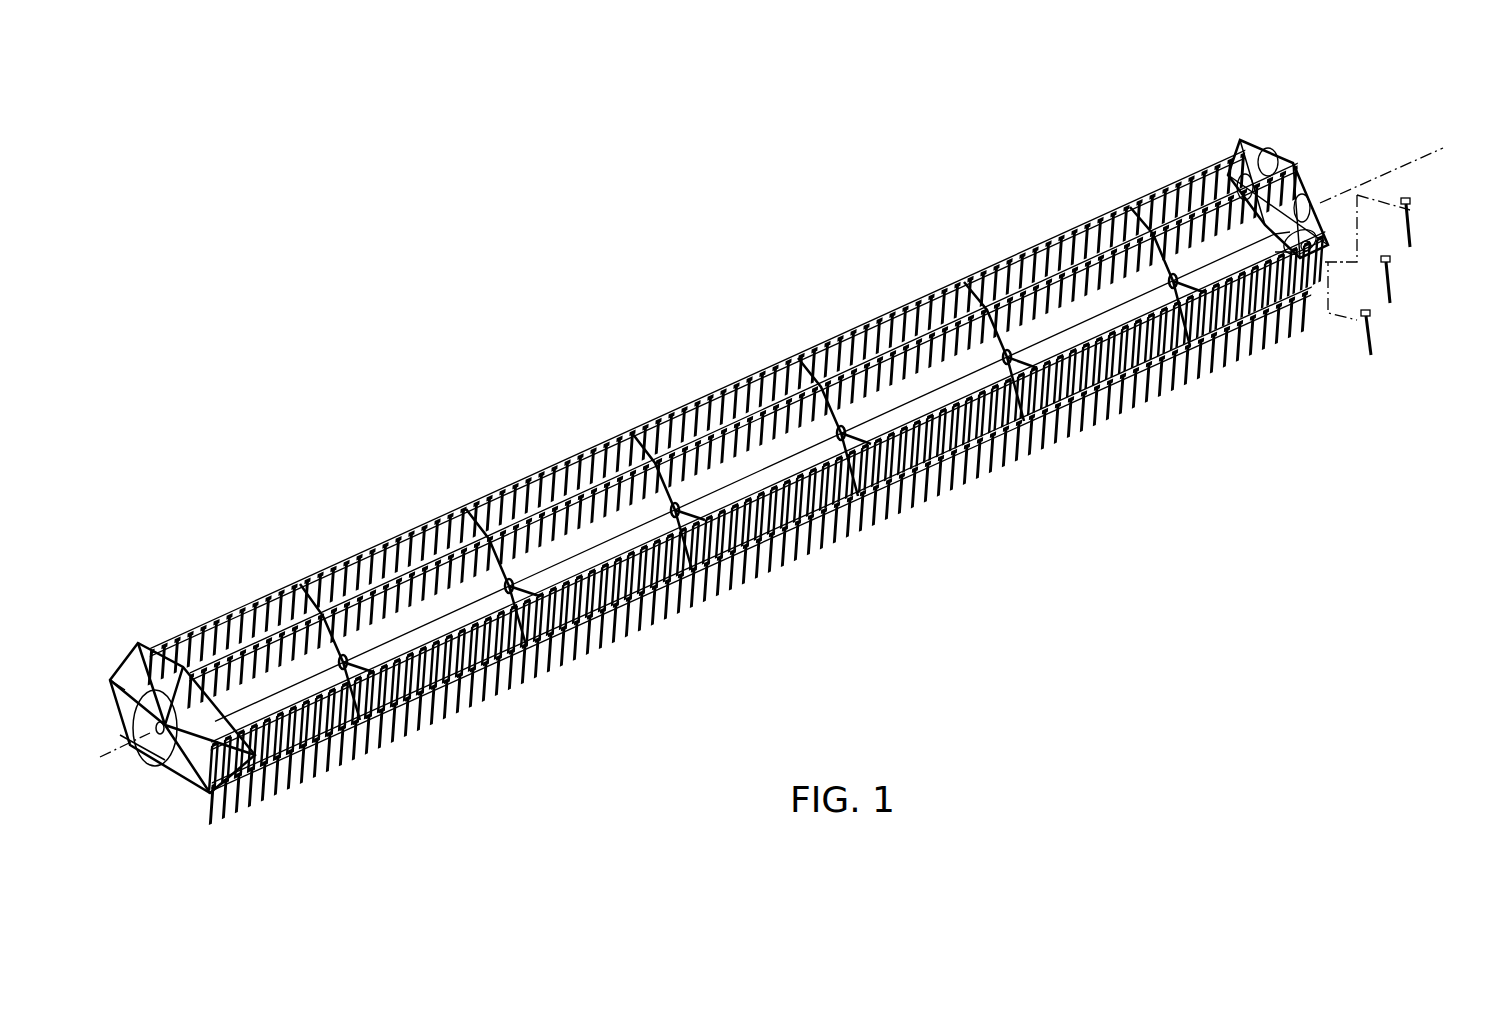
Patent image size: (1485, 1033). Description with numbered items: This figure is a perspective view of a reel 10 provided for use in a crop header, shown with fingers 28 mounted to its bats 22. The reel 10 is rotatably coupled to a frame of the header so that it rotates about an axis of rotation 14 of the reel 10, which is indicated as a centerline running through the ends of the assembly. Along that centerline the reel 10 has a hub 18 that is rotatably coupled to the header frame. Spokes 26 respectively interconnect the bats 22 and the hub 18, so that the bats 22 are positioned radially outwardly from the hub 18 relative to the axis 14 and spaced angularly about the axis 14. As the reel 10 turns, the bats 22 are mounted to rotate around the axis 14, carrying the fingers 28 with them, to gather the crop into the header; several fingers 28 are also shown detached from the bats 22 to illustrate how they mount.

The reel 10 is at (437, 237).
The axis of rotation 14 is at (110, 757).
The hub 18 is at (920, 392).
The bats 22 is at (1310, 205).
The spokes 26 is at (1278, 250).
The fingers 28 is at (1072, 430).